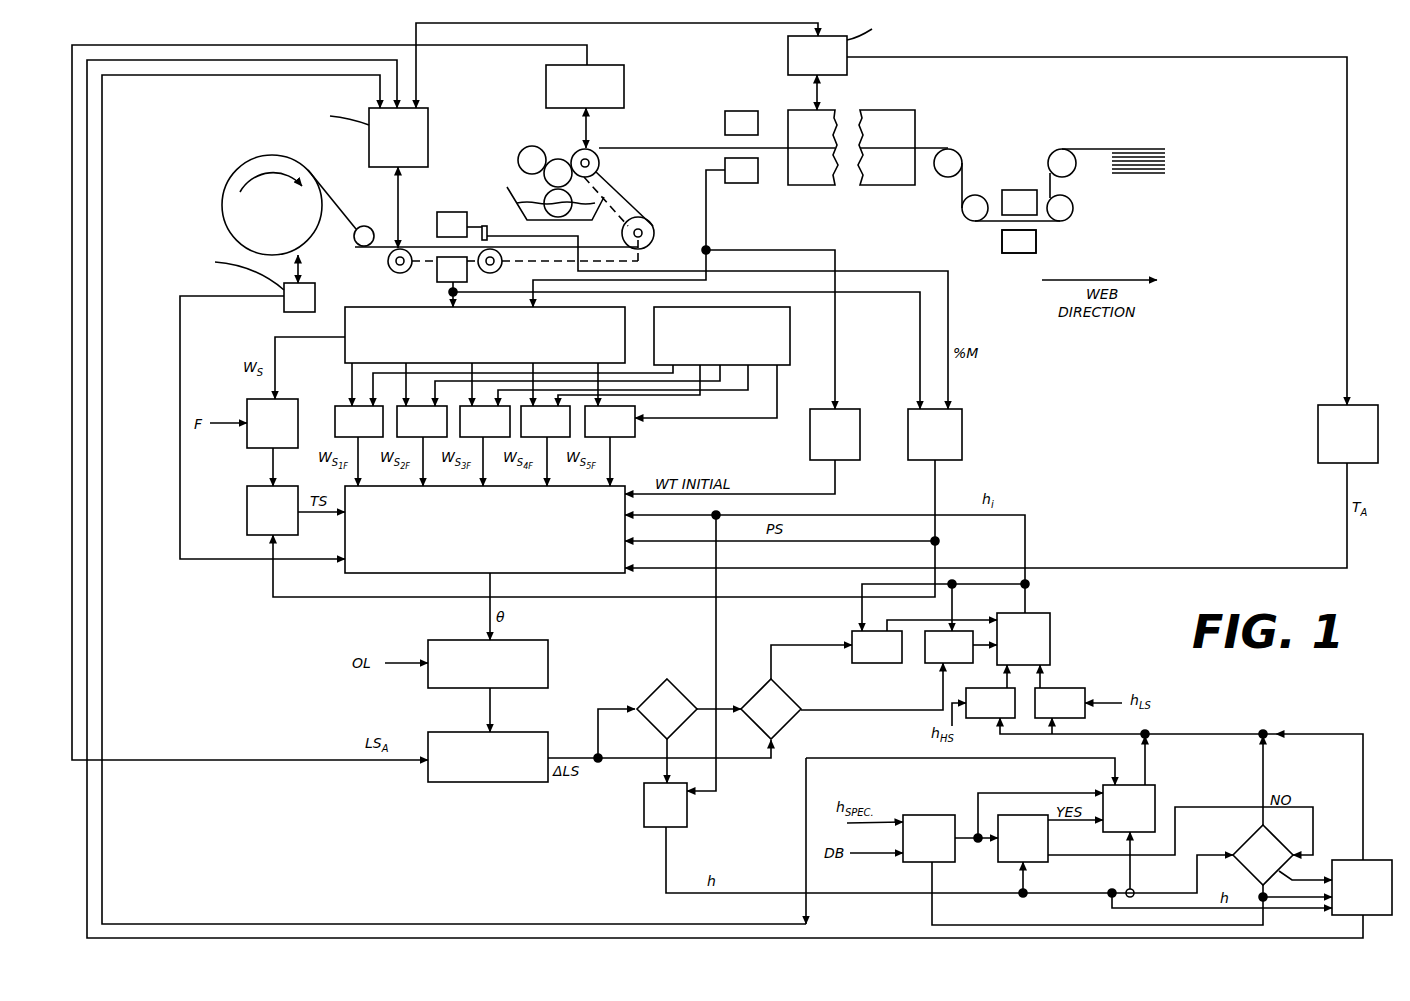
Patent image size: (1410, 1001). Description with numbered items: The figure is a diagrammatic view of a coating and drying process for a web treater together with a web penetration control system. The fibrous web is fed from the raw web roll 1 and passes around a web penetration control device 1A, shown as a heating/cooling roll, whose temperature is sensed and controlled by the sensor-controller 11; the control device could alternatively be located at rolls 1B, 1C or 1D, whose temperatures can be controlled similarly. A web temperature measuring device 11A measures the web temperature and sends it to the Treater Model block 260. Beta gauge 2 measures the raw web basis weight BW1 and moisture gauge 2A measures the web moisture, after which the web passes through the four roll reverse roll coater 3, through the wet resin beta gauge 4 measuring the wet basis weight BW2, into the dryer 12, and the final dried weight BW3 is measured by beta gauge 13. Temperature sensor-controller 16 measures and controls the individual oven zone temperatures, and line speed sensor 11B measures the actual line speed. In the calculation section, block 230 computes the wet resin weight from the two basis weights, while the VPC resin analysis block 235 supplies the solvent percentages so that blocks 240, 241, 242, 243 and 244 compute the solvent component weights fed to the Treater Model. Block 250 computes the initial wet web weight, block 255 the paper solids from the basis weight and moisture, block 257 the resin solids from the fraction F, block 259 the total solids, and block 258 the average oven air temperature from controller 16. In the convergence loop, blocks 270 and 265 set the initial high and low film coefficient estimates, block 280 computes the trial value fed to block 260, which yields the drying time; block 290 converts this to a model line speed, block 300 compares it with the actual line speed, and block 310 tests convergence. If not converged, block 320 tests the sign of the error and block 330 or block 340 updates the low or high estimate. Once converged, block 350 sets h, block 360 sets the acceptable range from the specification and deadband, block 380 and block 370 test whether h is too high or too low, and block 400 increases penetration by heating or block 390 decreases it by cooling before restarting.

The raw web roll 1 is at (224, 190).
The web penetration control device 1A is at (388, 261).
The roll 1B is at (498, 271).
The roll 1C is at (654, 231).
The roll 1D is at (599, 163).
The beta gauge 2 is at (447, 212).
The moisture gauge 2A is at (484, 226).
The coater 3 is at (585, 220).
The wet resin beta gauge 4 is at (736, 111).
The sensor-controller 11 is at (428, 135).
The web temperature measuring device 11A is at (284, 306).
The line speed sensor 11B is at (624, 82).
The dryer 12 is at (915, 114).
The beta gauge 13 is at (1036, 240).
The temperature sensor-controller 16 is at (788, 52).
The raw web basis weight BW1 is at (437, 279).
The wet resin basis weight BW2 is at (737, 181).
The final dried weight BW3 is at (1018, 251).
The wet resin weight block 230 is at (485, 335).
The VPC resin analysis block 235 is at (790, 365).
The first solvent weight block 240 is at (359, 421).
The second solvent weight block 241 is at (422, 421).
The solvent weight block 242 is at (485, 421).
The third solvent weight block 243 is at (545, 421).
The solvent weight block 244 is at (610, 421).
The initial web wet weight block 250 is at (835, 434).
The paper solids block 255 is at (935, 434).
The resin solids block 257 is at (272, 423).
The average oven air temperature block 258 is at (1348, 434).
The total solids block 259 is at (272, 510).
The Treater Model block 260 is at (485, 529).
The low h initialization block 265 is at (1060, 703).
The high h initialization block 270 is at (990, 703).
The hi calculation block 280 is at (1023, 639).
The line speed calculation block 290 is at (548, 647).
The line speed difference block 300 is at (508, 732).
The convergence decision block 310 is at (667, 709).
The sign decision block 320 is at (771, 709).
The low estimate update block 330 is at (877, 647).
The high estimate update block 340 is at (949, 647).
The h setting block 350 is at (665, 805).
The h range block 360 is at (929, 838).
The low h decision block 370 is at (1263, 855).
The high h decision block 380 is at (1023, 838).
The penetration decrease block 390 is at (1362, 887).
The penetration increase block 400 is at (1129, 808).